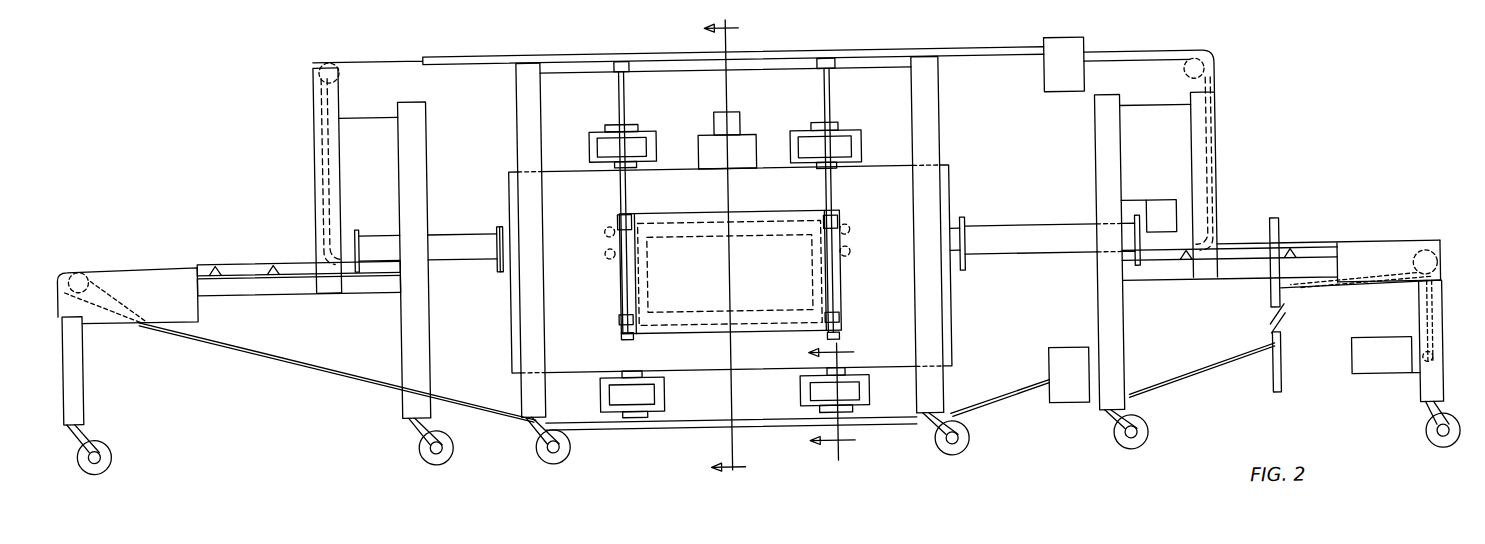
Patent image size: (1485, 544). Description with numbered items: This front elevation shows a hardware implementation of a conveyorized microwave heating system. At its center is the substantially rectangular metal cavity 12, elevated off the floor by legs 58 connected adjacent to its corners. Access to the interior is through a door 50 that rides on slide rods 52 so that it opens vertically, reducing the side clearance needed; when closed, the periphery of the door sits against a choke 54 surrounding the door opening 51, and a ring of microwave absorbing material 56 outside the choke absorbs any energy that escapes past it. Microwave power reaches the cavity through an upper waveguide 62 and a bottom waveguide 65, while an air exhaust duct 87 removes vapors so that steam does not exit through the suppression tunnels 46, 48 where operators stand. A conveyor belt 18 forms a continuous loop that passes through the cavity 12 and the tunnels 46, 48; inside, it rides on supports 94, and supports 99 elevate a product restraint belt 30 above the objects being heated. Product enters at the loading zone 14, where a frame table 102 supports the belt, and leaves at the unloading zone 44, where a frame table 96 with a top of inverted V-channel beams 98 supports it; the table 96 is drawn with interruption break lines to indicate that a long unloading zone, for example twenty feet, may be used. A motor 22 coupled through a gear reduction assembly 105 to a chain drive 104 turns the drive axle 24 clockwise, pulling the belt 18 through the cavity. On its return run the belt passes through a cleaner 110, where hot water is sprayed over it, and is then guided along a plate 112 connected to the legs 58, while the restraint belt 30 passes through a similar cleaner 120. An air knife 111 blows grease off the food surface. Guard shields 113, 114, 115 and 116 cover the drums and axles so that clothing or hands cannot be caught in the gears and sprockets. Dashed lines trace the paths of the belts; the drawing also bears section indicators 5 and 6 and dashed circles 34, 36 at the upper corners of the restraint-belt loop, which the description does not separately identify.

The section line 5- 5 is at (740, 246).
The section line 6- 6 is at (841, 401).
The cavity 12 is at (582, 168).
The loading zone 14 is at (698, 328).
The conveyor belt 18 is at (140, 259).
The motor 22 is at (1350, 368).
The drive axle 24 is at (1470, 262).
The restraint belt 30 is at (319, 140).
The belt roller 34 is at (332, 56).
The belt roller 36 is at (1206, 72).
The unloading zone 44 is at (1297, 313).
The suppression tunnel 46 is at (448, 230).
The suppression tunnel 48 is at (1038, 230).
The door 50 is at (760, 212).
The door opening 51 is at (715, 322).
The slide rods 52 is at (620, 180).
The choke 54 is at (640, 222).
The microwave absorbing material 56 is at (686, 212).
The legs 58 is at (519, 113).
The upper waveguide 62 is at (643, 140).
The bottom waveguide 65 is at (615, 393).
The air exhaust duct 87 is at (746, 135).
The supports 94 is at (602, 252).
The frame table 96 is at (1258, 287).
The inverted V-channel beams 98 is at (278, 258).
The supports 99 is at (602, 230).
The frame table 102 is at (278, 288).
The chain drive 104 is at (1424, 320).
The gear reduction assembly 105 is at (1418, 345).
The cleaner 110 is at (1075, 353).
The air knife 111 is at (1162, 215).
The plate 112 is at (718, 420).
The guard shield 113 is at (175, 318).
The guard shield 114 is at (1382, 296).
The guard shield 115 is at (367, 118).
The guard shield 116 is at (1172, 112).
The cleaner 120 is at (1075, 43).